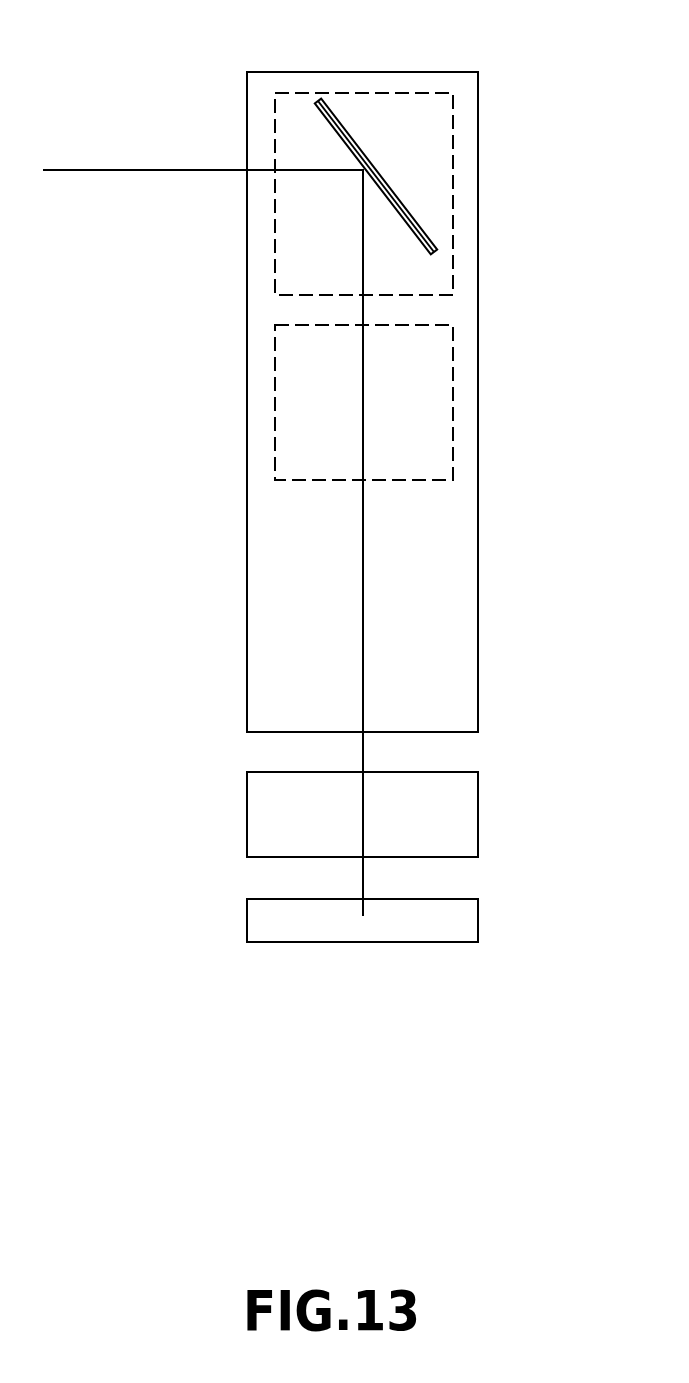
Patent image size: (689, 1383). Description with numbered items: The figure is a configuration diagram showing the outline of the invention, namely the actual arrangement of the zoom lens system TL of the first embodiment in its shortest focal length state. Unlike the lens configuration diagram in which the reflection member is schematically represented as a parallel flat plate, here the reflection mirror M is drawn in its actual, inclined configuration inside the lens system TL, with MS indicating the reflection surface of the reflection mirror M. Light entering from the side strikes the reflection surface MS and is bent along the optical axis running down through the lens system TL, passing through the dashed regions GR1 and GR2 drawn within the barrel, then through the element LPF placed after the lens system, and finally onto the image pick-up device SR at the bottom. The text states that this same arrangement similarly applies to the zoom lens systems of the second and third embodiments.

The zoom lens system TL is at (465, 497).
The first lens group GR1 is at (453, 145).
The second lens group GR2 is at (453, 377).
The reflection mirror M is at (342, 122).
The reflection surface MS is at (336, 133).
The low-pass filter LPF is at (465, 813).
The image pick-up device SR is at (465, 927).